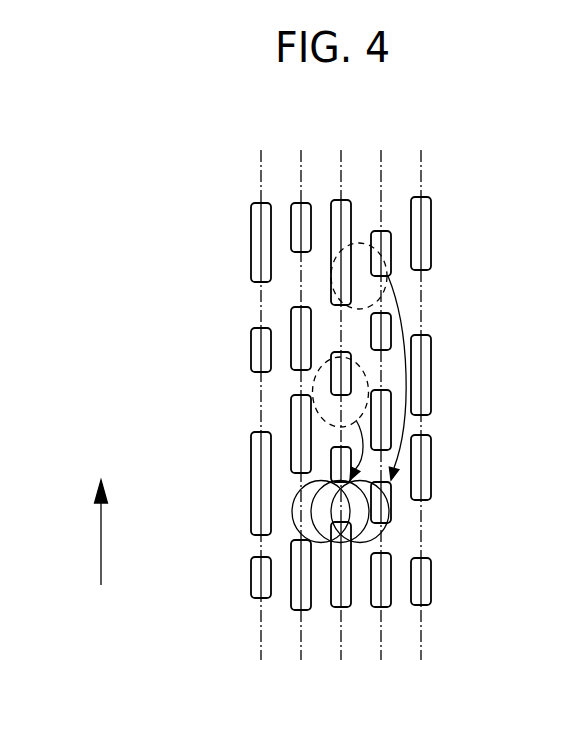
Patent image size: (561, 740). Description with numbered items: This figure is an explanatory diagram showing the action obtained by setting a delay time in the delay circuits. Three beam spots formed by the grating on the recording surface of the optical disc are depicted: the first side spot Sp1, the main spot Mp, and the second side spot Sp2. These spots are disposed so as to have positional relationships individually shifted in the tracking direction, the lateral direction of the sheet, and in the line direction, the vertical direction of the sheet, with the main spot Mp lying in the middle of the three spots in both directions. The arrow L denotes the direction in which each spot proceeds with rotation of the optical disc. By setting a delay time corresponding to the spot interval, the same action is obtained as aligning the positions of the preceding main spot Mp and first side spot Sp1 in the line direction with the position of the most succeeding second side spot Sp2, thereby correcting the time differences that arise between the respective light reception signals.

The first side spot Sp1 is at (376, 531).
The second side spot Sp2 is at (296, 528).
The main spot Mp is at (361, 543).
The arrow denoting spot proceeding direction L is at (102, 533).